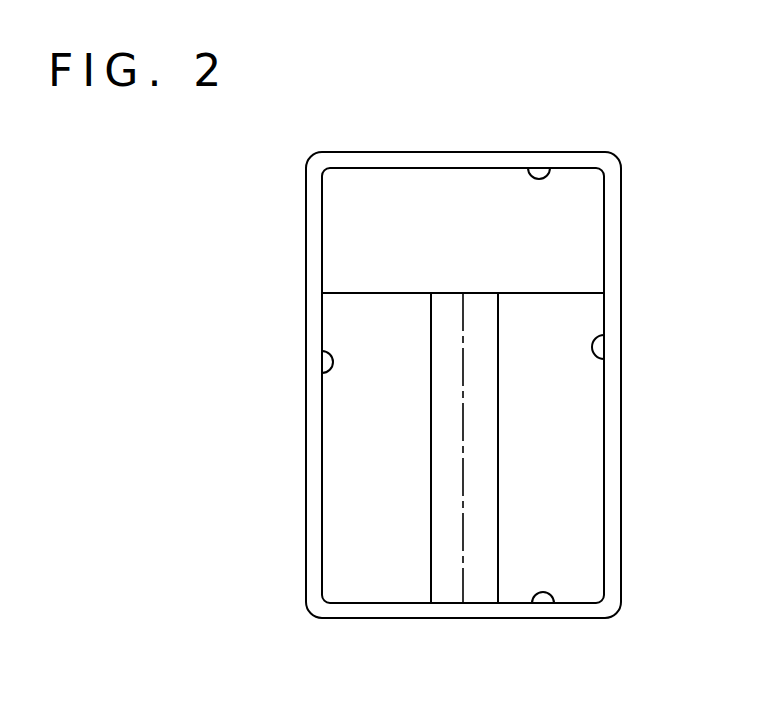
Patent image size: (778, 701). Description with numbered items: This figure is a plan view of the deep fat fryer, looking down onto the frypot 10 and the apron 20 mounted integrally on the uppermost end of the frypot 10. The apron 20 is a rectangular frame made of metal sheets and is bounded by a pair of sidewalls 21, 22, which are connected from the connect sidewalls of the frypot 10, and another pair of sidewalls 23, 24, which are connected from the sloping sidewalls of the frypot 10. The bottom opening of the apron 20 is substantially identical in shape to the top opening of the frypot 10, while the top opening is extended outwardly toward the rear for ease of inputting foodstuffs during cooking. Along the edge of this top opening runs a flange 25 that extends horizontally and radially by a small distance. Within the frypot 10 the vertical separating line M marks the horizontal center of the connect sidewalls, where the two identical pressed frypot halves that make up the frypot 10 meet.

The frypot 10 is at (579, 438).
The apron 20 is at (608, 152).
The sidewall 21 is at (557, 600).
The sidewall 22 is at (527, 172).
The sidewall 23 is at (330, 372).
The sidewall 24 is at (620, 360).
The flange 25 is at (623, 222).
The vertical separating line M is at (462, 545).